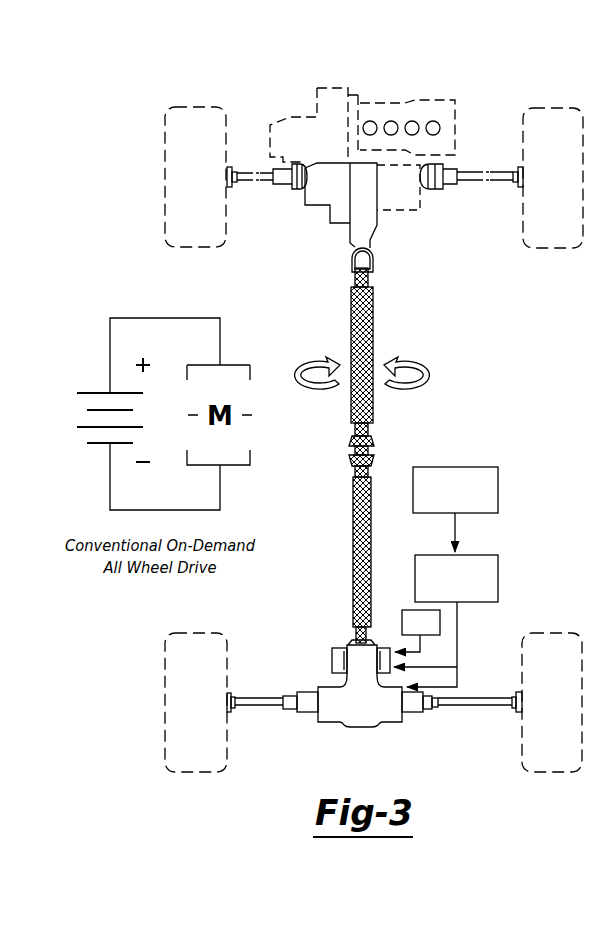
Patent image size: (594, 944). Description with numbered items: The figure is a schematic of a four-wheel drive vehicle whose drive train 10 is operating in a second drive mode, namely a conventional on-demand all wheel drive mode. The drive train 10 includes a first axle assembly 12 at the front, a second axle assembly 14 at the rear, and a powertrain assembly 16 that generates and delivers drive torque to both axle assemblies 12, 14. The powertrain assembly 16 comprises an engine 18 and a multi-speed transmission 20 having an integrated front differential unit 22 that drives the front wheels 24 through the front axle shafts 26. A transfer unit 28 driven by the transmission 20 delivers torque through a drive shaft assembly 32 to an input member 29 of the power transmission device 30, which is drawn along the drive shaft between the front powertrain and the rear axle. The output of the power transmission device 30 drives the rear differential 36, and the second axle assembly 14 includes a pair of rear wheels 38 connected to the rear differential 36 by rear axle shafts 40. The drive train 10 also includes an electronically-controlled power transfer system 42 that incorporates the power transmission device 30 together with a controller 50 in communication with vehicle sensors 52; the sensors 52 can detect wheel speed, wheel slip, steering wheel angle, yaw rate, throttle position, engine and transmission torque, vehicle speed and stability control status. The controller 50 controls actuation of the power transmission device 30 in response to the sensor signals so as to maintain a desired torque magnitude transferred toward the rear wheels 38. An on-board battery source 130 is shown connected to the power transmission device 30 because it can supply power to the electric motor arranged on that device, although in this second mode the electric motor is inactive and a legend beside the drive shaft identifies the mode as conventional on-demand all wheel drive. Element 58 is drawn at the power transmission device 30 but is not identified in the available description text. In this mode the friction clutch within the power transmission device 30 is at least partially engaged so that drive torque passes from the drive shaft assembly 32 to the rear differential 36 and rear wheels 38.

The drive train 10 is at (442, 305).
The first axle assembly 12 is at (471, 150).
The second axle assembly 14 is at (465, 677).
The powertrain assembly 16 is at (377, 217).
The engine 18 is at (388, 104).
The multi-speed transmission 20 is at (292, 120).
The front differential unit 22 is at (318, 200).
The front wheels 24 is at (194, 107).
The front axle shafts 26 is at (250, 174).
The transfer unit 28 is at (340, 220).
The input member 29 is at (352, 530).
The power transmission device 30 is at (326, 666).
The drive shaft assembly 32 is at (350, 401).
The rear differential 36 is at (365, 728).
The rear wheels 38 is at (188, 775).
The rear axle shafts 40 is at (263, 709).
The power transfer system 42 is at (509, 540).
The controller 50 is at (498, 580).
The vehicle sensors 52 is at (498, 492).
The clutch actuator 58 is at (323, 641).
The on-board battery source 130 is at (408, 610).